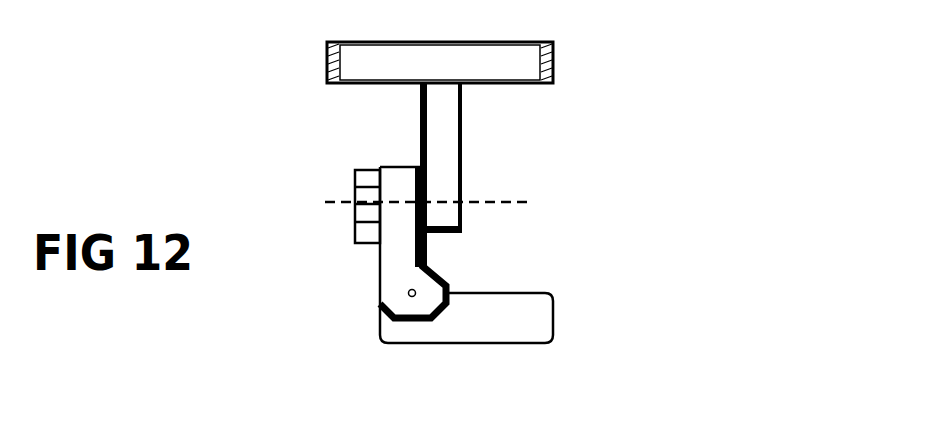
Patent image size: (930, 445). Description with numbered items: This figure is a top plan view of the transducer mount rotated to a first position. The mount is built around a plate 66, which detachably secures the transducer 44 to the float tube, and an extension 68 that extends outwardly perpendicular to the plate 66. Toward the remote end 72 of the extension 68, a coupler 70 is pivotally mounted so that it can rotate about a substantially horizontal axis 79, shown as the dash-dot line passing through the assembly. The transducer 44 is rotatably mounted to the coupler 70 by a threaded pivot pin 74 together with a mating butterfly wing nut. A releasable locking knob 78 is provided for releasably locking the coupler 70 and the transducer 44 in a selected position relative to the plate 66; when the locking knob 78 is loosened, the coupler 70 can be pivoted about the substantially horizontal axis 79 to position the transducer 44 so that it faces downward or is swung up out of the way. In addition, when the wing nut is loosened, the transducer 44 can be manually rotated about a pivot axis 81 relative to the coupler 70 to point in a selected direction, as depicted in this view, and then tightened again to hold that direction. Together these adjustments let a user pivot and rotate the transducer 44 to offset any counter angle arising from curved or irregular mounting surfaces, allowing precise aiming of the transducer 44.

The transducer 44 is at (552, 328).
The plate 66 is at (555, 50).
The extension 68 is at (462, 137).
The coupler 70 is at (392, 295).
The remote end 72 is at (447, 237).
The threaded pivot pin 74 is at (409, 291).
The releasable locking knob 78 is at (357, 173).
The substantially horizontal axis 79 is at (325, 203).
The pivot axis 81 is at (414, 296).